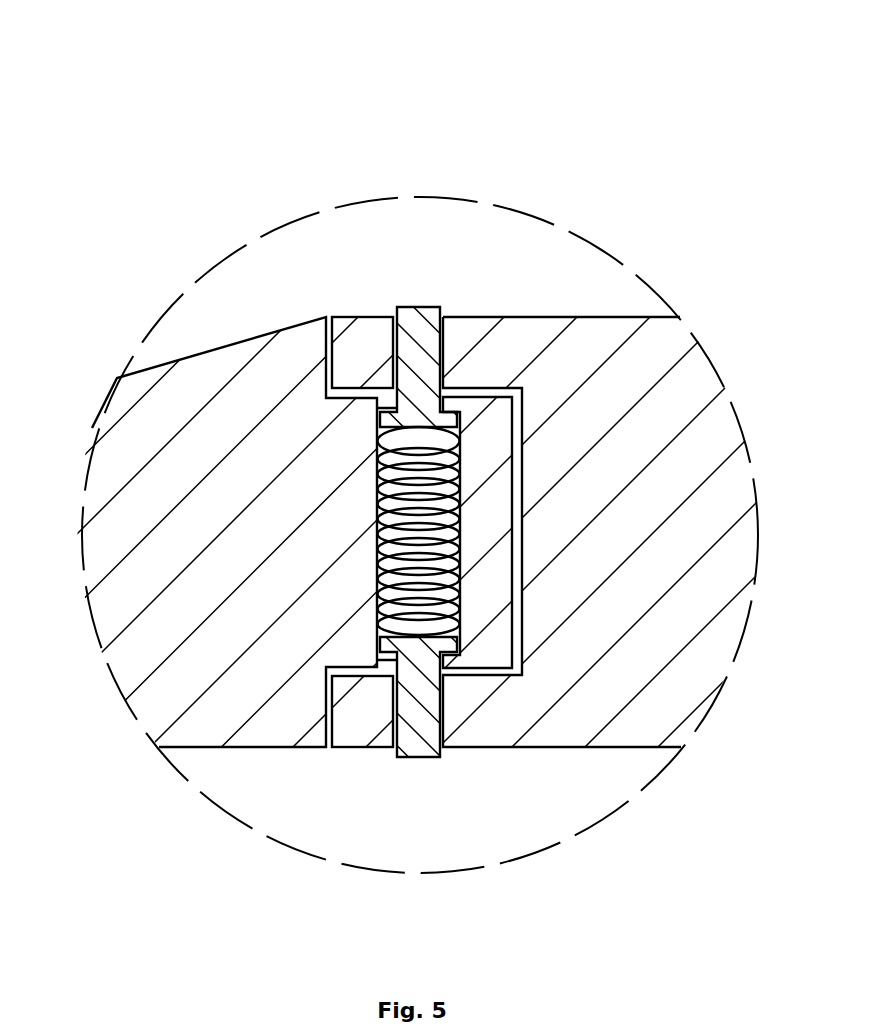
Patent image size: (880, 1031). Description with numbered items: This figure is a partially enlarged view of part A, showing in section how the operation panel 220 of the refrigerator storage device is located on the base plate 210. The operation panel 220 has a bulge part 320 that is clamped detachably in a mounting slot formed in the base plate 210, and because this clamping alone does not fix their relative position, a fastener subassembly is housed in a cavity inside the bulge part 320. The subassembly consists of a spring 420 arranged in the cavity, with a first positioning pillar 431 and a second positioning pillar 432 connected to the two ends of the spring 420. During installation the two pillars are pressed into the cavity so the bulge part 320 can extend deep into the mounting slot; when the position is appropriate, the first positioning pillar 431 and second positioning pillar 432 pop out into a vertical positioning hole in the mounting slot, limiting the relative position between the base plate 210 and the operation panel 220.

The part A is at (458, 194).
The base plate 210 is at (570, 348).
The operation panel 220 is at (205, 417).
The bulge part 320 is at (487, 635).
The spring 420 is at (387, 612).
The first positioning pillar 431 is at (420, 343).
The second positioning pillar 432 is at (418, 715).